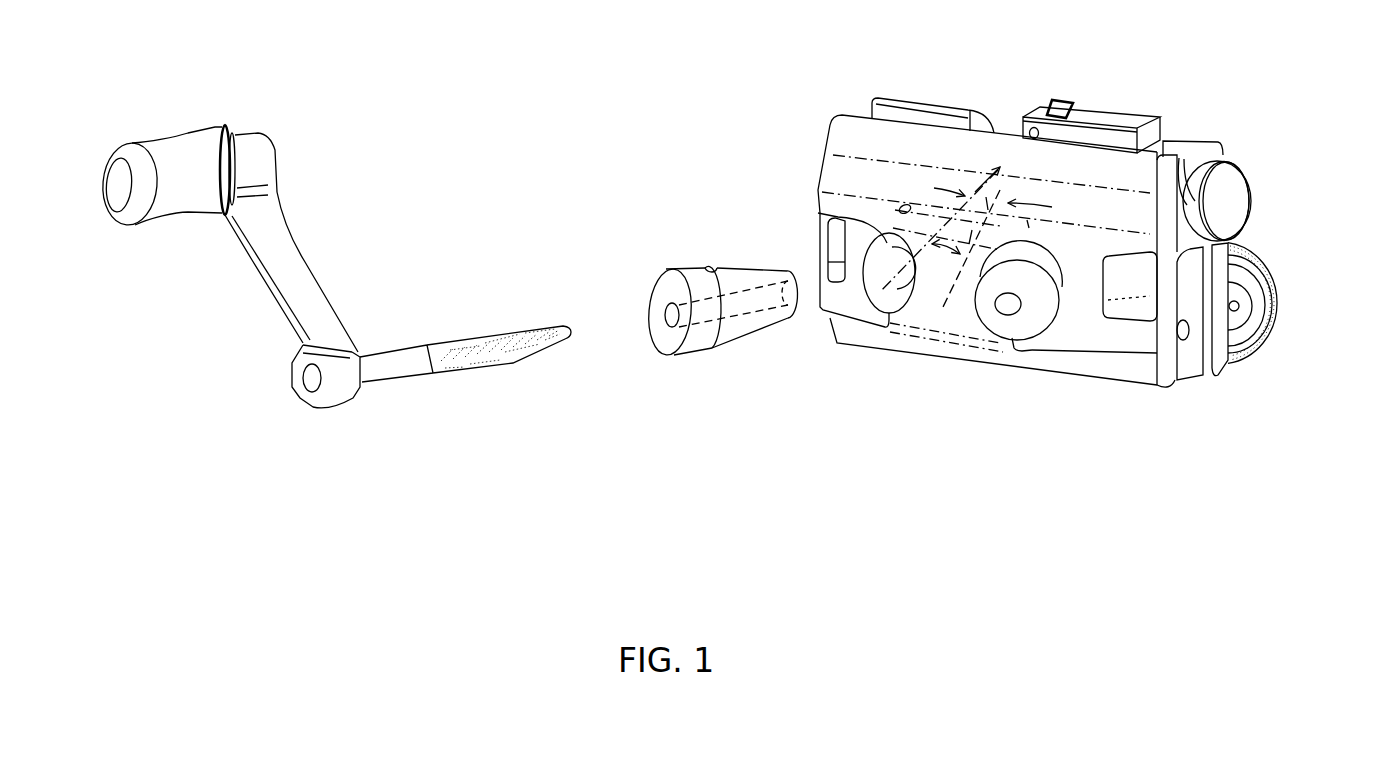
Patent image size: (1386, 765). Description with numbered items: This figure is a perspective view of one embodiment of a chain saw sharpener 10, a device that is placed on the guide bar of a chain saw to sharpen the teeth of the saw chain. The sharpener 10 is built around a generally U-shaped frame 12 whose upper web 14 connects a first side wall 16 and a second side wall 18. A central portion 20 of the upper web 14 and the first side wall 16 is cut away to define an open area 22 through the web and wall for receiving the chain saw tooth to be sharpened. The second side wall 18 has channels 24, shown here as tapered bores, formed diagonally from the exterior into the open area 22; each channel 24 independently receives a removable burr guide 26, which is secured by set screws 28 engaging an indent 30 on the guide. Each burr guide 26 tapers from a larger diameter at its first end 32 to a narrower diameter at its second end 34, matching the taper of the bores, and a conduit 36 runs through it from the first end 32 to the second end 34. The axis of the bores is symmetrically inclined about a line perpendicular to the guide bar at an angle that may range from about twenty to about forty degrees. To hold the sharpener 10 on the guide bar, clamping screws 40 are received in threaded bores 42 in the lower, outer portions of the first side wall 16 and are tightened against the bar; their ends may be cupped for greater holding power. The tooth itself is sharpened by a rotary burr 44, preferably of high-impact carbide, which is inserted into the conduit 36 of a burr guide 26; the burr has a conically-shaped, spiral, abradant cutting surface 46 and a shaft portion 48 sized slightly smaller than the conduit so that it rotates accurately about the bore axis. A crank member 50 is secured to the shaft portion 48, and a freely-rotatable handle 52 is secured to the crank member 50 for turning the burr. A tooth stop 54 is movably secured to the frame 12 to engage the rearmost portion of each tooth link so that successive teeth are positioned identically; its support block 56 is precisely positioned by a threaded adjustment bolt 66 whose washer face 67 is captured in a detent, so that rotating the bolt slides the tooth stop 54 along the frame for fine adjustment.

The chain saw sharpener 10 is at (989, 243).
The frame 12 is at (1243, 177).
The upper web 14 is at (944, 221).
The first side wall 16 is at (1226, 375).
The second side wall 18 is at (1133, 380).
The central portion 20 is at (1037, 76).
The open area 22 is at (1008, 117).
The channels 24 is at (880, 304).
The burr guide 26 is at (840, 319).
The set screws 28 is at (897, 206).
The indent 30 is at (710, 262).
The first end 32 is at (657, 265).
The second end 34 is at (790, 262).
The conduit 36 is at (668, 333).
The clamping screws 40 is at (1290, 295).
The threaded bores 42 is at (1190, 345).
The rotary burr 44 is at (337, 284).
The cutting surface 46 is at (512, 322).
The shaft portion 48 is at (466, 358).
The crank member 50 is at (265, 295).
The handle 52 is at (170, 183).
The tooth stop 54 is at (1113, 81).
The support block 56 is at (1093, 126).
The adjustment bolt 66 is at (1216, 211).
The washer face 67 is at (1183, 172).